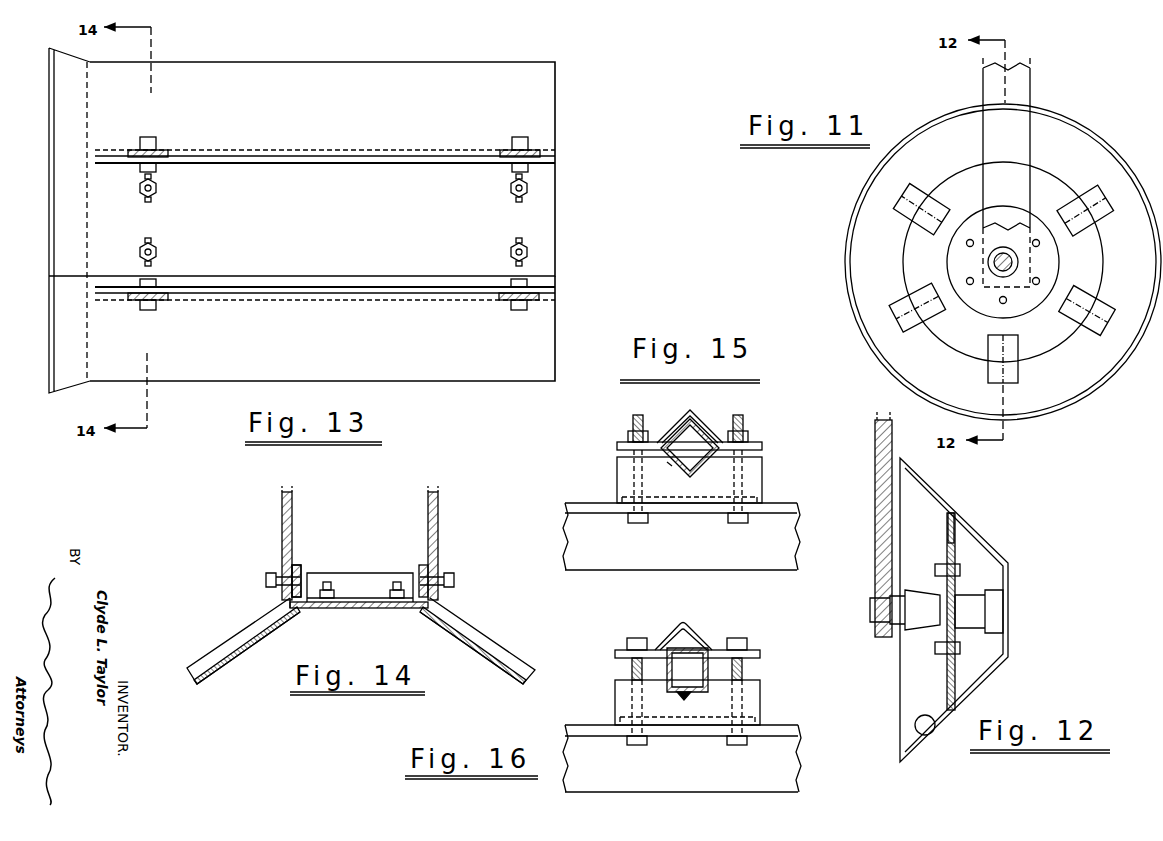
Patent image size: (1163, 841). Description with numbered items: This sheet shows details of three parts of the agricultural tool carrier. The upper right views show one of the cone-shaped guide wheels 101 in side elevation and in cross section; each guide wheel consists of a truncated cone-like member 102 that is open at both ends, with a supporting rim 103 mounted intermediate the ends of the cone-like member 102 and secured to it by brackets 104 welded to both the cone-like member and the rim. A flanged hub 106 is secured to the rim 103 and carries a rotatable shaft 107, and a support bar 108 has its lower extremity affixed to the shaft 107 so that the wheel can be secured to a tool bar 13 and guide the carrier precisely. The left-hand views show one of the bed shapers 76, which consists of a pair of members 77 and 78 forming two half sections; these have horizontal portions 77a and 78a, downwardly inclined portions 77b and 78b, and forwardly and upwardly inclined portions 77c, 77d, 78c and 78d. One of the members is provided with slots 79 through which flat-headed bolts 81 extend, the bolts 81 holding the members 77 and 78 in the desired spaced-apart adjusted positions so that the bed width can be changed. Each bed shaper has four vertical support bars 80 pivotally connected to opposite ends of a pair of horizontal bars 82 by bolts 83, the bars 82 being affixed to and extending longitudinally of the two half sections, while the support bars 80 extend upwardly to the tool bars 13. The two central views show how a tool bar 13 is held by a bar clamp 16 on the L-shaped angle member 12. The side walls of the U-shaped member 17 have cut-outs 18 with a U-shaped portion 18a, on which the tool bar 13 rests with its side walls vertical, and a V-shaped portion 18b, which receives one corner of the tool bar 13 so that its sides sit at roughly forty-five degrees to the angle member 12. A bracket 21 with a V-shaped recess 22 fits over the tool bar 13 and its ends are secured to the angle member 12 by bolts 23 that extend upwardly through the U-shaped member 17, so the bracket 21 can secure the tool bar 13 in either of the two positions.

In FIG. 15, the L-shaped angle member 12 is at (684, 549).
In FIG. 16, the L-shaped angle member 12 is at (693, 774).
In FIG. 15, the tool bar 13 is at (686, 420).
In FIG. 16, the tool bar 13 is at (684, 632).
In FIG. 15, the bar clamp 16 is at (722, 413).
In FIG. 16, the bar clamp 16 is at (717, 632).
In FIG. 15, the U-shaped member 17 is at (764, 482).
In FIG. 16, the U-shaped member 17 is at (620, 698).
In FIG. 15, the cut-out 18 is at (704, 470).
In FIG. 16, the cut-out 18 is at (687, 670).
In FIG. 15, the U-shaped portion 18a is at (676, 466).
In FIG. 16, the V-shaped portion 18b is at (695, 696).
In FIG. 15, the bracket 21 is at (764, 448).
In FIG. 16, the bracket 21 is at (687, 654).
In FIG. 15, the V-shaped recess 22 is at (697, 428).
In FIG. 16, the V-shaped recess 22 is at (693, 640).
In FIG. 15, the bolt 23 is at (630, 422).
In FIG. 16, the bolt 23 is at (748, 638).
In FIG. 13, the bed shaper 76 is at (578, 192).
In FIG. 14, the bed shaper 76 is at (458, 541).
In FIG. 13, the member 77 is at (557, 110).
In FIG. 13, the horizontal portion 77a is at (348, 216).
In FIG. 14, the horizontal portion 77a is at (368, 607).
In FIG. 13, the downwardly inclined portion 77b is at (348, 112).
In FIG. 14, the downwardly inclined portion 77b is at (478, 641).
In FIG. 14, the forwardly and upwardly inclined portion 77c is at (355, 585).
In FIG. 14, the forwardly and upwardly inclined portion 77d is at (484, 630).
In FIG. 13, the member 78 is at (558, 321).
In FIG. 13, the horizontal portion 78a is at (560, 282).
In FIG. 14, the horizontal portion 78a is at (355, 608).
In FIG. 13, the downwardly inclined portion 78b is at (348, 354).
In FIG. 14, the downwardly inclined portion 78b is at (222, 672).
In FIG. 14, the forwardly and upwardly inclined portion 78c is at (300, 612).
In FIG. 14, the forwardly and upwardly inclined portion 78d is at (235, 632).
In FIG. 13, the slot 79 is at (143, 245).
In FIG. 14, the slot 79 is at (360, 606).
In FIG. 13, the vertical support bar 80 is at (158, 148).
In FIG. 14, the vertical support bar 80 is at (286, 504).
In FIG. 13, the flat-headed bolt 81 is at (155, 245).
In FIG. 14, the flat-headed bolt 81 is at (328, 582).
In FIG. 13, the horizontal bar 82 is at (428, 163).
In FIG. 13, the bolt 83 is at (526, 140).
In FIG. 11, the cone-shaped guide wheel 101 is at (1090, 118).
In FIG. 12, the cone-shaped guide wheel 101 is at (1010, 668).
In FIG. 11, the truncated cone-like member 102 is at (1084, 360).
In FIG. 11, the supporting rim 103 is at (972, 329).
In FIG. 12, the supporting rim 103 is at (955, 665).
In FIG. 11, the bracket 104 is at (1087, 197).
In FIG. 12, the bracket 104 is at (940, 525).
In FIG. 11, the flanged hub 106 is at (968, 223).
In FIG. 12, the flanged hub 106 is at (945, 578).
In FIG. 11, the rotatable shaft 107 is at (1018, 257).
In FIG. 12, the rotatable shaft 107 is at (873, 611).
In FIG. 11, the support bar 108 is at (1018, 155).
In FIG. 12, the support bar 108 is at (875, 446).